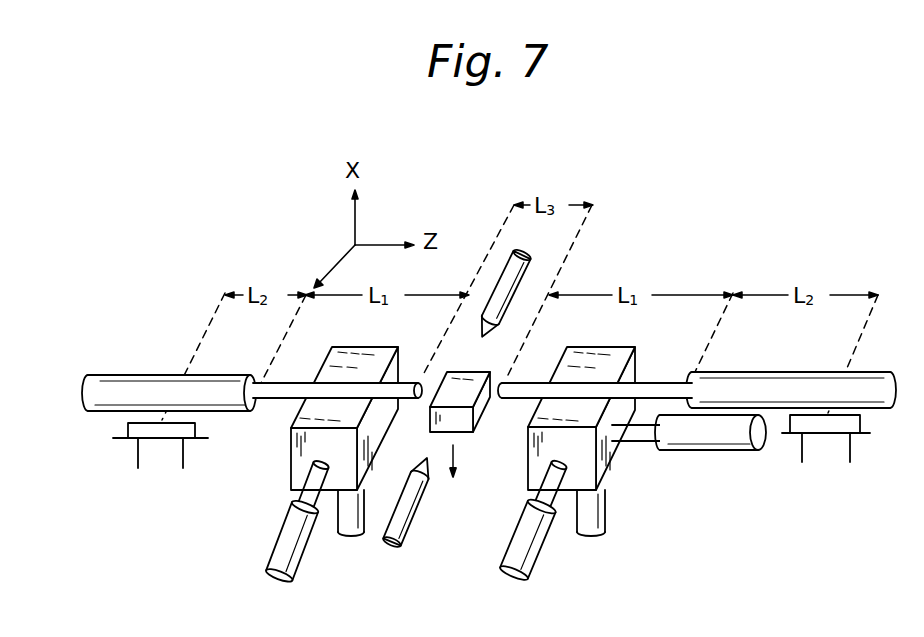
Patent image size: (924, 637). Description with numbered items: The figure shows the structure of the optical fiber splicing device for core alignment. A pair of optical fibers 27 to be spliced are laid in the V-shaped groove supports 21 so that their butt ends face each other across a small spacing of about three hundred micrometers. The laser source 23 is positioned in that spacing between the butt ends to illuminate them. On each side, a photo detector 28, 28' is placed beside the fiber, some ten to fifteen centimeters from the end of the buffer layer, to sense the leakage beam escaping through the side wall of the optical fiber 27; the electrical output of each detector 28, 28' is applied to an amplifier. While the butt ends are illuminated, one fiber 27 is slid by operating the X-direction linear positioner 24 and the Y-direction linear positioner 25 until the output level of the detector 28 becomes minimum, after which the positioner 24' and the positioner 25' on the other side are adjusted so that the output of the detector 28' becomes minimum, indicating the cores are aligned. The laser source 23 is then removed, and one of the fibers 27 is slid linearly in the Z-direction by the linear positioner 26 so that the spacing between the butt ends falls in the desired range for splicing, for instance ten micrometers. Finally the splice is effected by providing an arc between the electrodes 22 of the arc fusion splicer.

The V-shaped groove support 21 is at (353, 348).
The electrode of an arc fusion splicer 22 is at (516, 256).
The laser source 23 is at (473, 433).
The linear positioner (X-direction) 24 is at (356, 541).
The linear positioner 24' is at (612, 534).
The linear positioner (Y-direction) 25 is at (300, 542).
The linear positioner 25' is at (536, 544).
The linear positioner (Z-direction) 26 is at (741, 448).
The optical fiber to be spliced 27 is at (176, 377).
The photo detector 28 is at (145, 454).
The photo detector 28' is at (853, 438).